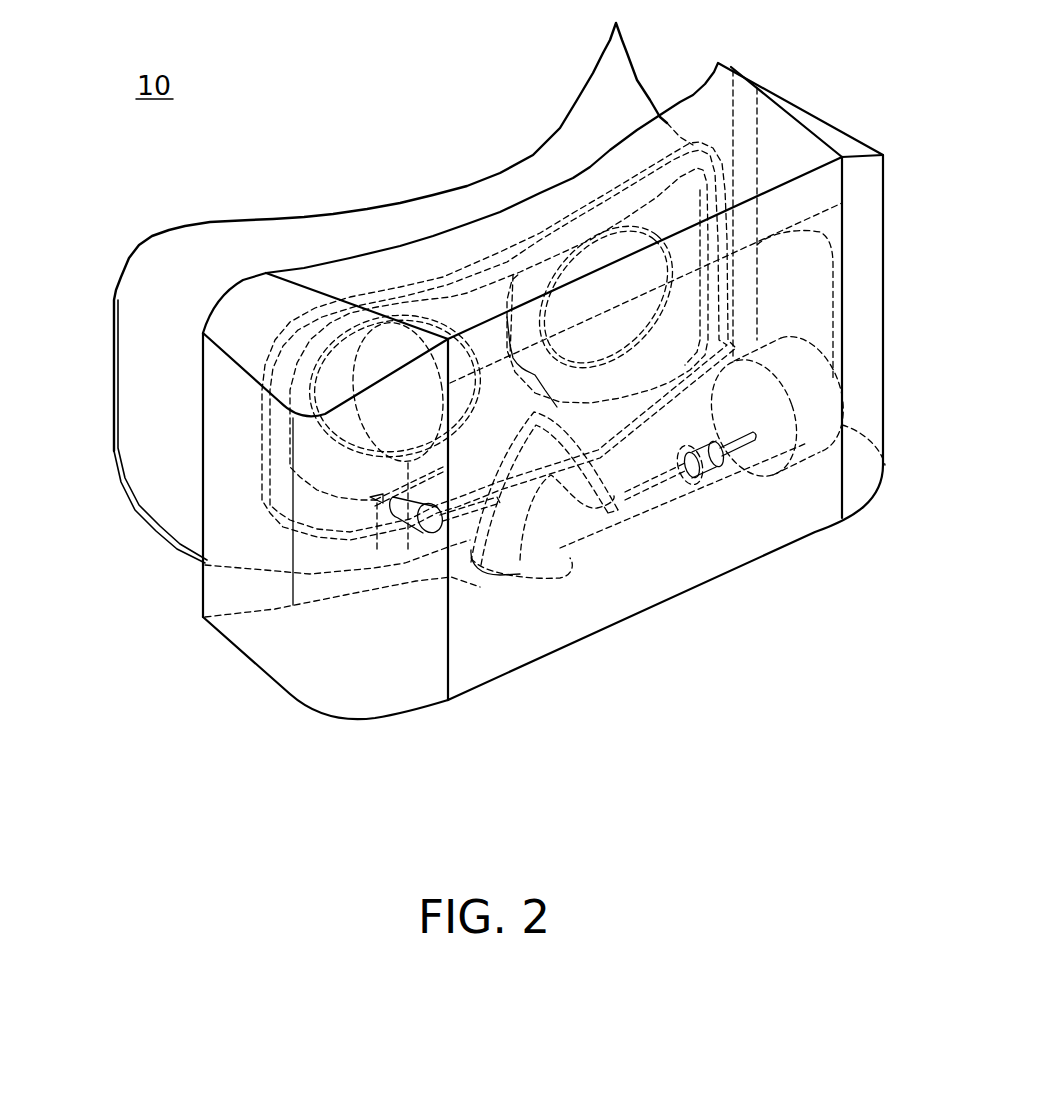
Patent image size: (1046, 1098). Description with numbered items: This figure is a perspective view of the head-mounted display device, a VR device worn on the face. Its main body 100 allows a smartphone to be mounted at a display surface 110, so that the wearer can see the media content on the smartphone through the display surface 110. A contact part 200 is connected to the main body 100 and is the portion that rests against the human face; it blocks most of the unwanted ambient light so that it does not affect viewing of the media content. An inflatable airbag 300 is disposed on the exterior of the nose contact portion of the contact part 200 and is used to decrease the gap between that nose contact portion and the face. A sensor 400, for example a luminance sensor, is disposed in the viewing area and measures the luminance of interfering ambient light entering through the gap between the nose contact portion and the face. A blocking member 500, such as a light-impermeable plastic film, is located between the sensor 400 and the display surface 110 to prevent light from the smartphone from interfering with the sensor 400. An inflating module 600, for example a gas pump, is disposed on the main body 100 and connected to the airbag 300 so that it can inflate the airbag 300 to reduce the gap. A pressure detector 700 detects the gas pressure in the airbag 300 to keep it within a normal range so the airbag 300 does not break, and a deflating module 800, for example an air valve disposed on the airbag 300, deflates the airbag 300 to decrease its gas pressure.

The main body 100 is at (848, 148).
The display surface 110 is at (677, 495).
The contact part 200 is at (145, 443).
The airbag 300 is at (568, 572).
The sensor 400 is at (412, 520).
The blocking member 500 is at (377, 505).
The inflating module 600 is at (808, 465).
The pressure detector 700 is at (717, 477).
The deflating module 800 is at (625, 492).